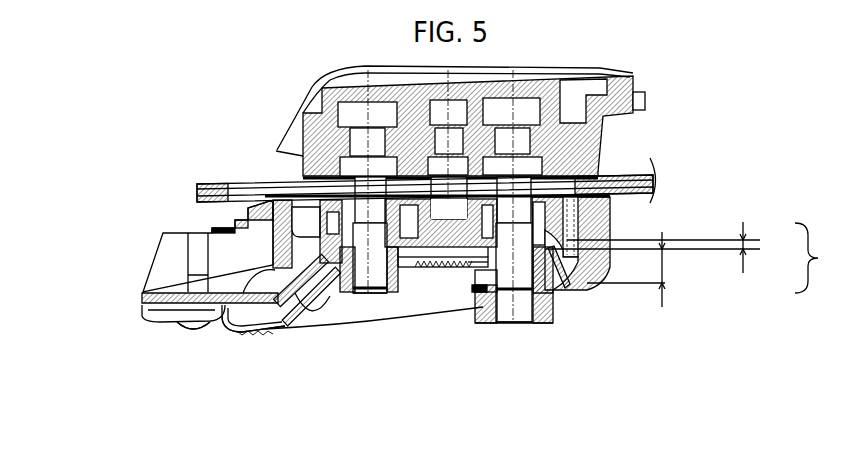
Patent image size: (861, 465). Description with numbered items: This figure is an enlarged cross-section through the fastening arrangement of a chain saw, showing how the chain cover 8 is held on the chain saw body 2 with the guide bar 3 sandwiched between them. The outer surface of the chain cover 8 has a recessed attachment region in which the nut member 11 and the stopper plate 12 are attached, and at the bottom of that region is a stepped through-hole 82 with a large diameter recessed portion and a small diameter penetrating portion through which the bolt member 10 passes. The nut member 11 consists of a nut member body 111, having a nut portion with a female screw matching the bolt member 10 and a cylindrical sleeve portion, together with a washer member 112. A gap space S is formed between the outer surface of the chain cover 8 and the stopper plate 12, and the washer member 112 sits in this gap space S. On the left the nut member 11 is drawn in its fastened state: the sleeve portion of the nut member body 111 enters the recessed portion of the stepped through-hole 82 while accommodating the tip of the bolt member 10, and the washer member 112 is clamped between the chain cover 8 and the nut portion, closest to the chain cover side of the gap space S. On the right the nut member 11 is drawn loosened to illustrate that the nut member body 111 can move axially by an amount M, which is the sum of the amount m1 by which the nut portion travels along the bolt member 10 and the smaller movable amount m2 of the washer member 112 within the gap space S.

The chain saw body 2 is at (322, 140).
The guide bar 3 is at (623, 177).
The chain cover 8 is at (198, 322).
The bolt member 10 is at (360, 293).
The nut member 11 is at (393, 295).
The stopper plate 12 is at (447, 262).
The stepped through-hole 82 is at (320, 222).
The nut member body 111 is at (297, 203).
The washer member 112 is at (280, 327).
The gap space S is at (435, 253).
The moving amount of nut portion on bolt member m1 is at (640, 269).
The movable amount of washer member m2 is at (666, 247).
The movable amount of nut member body M is at (818, 258).